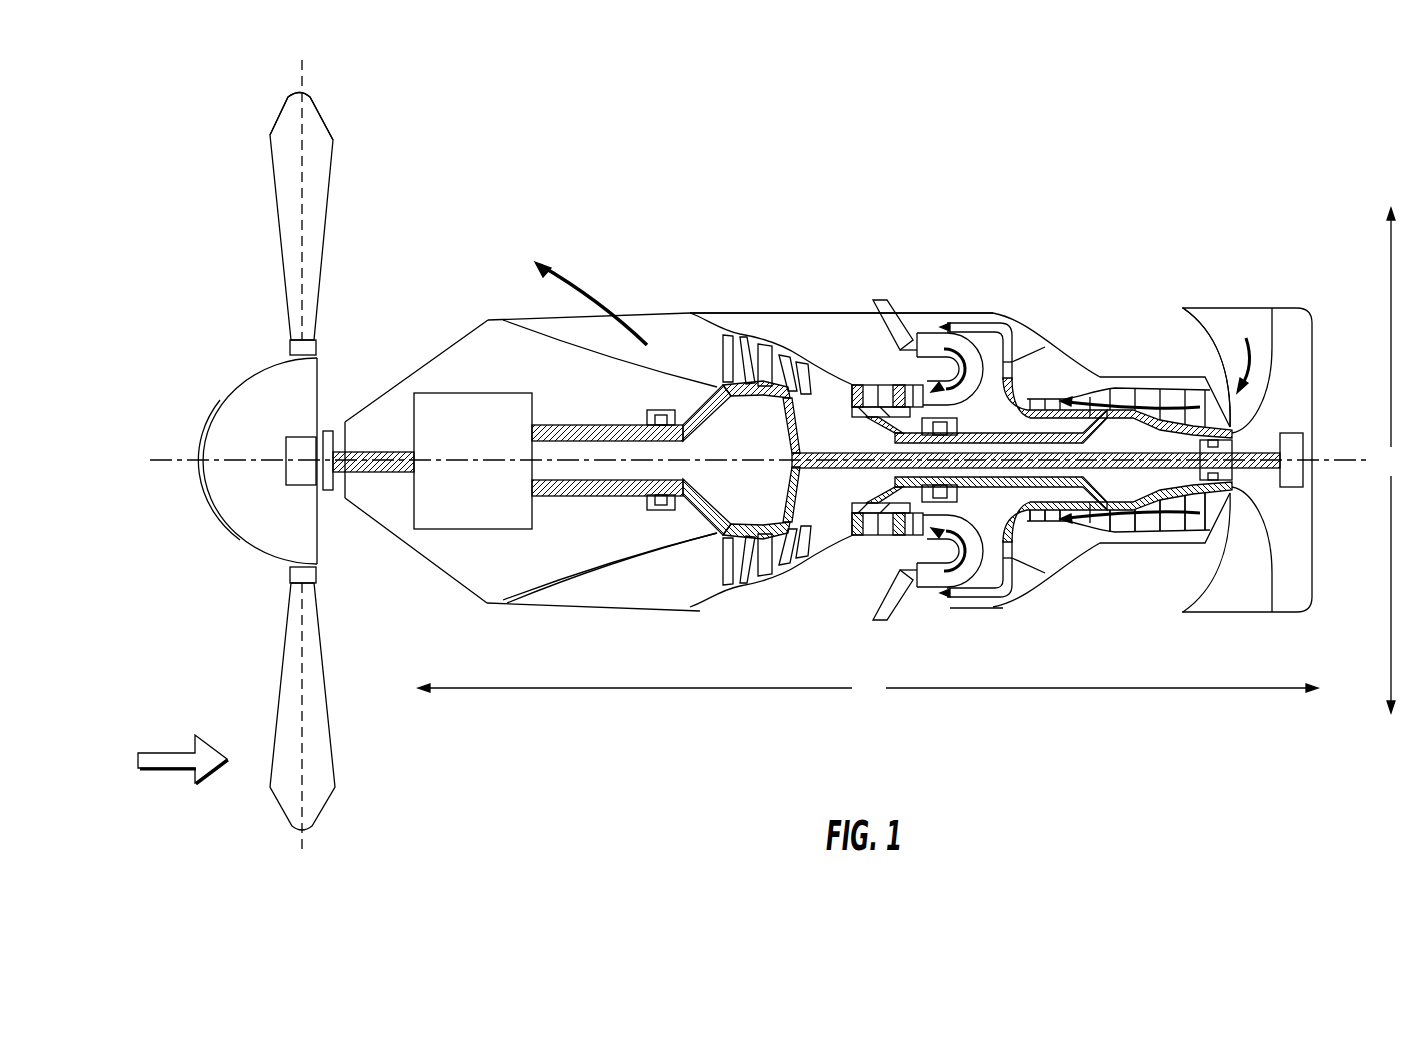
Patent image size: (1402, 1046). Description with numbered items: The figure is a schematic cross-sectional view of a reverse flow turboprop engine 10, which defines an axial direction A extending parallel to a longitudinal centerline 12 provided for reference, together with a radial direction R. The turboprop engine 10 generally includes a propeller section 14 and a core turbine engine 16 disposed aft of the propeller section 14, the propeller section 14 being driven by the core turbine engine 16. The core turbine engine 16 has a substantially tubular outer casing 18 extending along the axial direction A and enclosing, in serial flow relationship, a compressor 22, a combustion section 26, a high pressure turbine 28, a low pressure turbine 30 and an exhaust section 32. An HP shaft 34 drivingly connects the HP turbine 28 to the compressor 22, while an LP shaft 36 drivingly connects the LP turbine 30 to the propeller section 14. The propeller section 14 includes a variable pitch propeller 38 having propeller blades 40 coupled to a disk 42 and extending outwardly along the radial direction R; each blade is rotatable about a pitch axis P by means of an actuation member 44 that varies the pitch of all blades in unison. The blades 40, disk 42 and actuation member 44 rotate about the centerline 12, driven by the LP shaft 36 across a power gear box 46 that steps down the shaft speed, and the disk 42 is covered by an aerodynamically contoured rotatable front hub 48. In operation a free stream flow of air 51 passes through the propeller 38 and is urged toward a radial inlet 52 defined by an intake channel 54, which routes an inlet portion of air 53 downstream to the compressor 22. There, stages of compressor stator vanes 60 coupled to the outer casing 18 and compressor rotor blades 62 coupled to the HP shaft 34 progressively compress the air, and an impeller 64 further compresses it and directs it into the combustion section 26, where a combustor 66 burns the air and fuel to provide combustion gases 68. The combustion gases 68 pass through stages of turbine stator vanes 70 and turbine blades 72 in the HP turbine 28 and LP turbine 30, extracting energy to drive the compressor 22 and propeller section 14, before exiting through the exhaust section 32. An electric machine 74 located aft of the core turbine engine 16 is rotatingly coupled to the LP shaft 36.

The turboprop engine 10 is at (490, 278).
The longitudinal centerline 12 is at (1330, 465).
The propeller section 14 is at (336, 222).
The core turbine engine 16 is at (729, 261).
The outer casing 18 is at (940, 313).
The compressor 22 is at (1150, 555).
The combustion section 26 is at (927, 606).
The high pressure turbine 28 is at (876, 550).
The low pressure turbine 30 is at (749, 597).
The exhaust section 32 is at (653, 591).
The HP shaft 34 is at (1080, 393).
The LP shaft 36 is at (690, 386).
The variable pitch propeller 38 is at (246, 553).
The propeller blades 40 is at (273, 176).
The disk 42 is at (320, 344).
The actuation member 44 is at (287, 437).
The power gear box 46 is at (457, 393).
The front hub 48 is at (226, 526).
The free stream flow of air 51 is at (173, 755).
The radial inlet 52 is at (1229, 298).
The inlet portion of air 53 is at (1253, 362).
The intake channel 54 is at (1289, 298).
The compressor stator vanes 60 is at (1168, 527).
The compressor rotor blades 62 is at (1143, 527).
The impeller 64 is at (1022, 523).
The combustor 66 is at (921, 355).
The combustion gases 68 is at (578, 300).
The turbine stator vanes 70 is at (744, 337).
The turbine blades 72 is at (723, 343).
The electric machine 74 is at (1303, 446).
The pitch axis P is at (305, 130).
The axial direction A is at (868, 689).
The radial direction R is at (1391, 460).